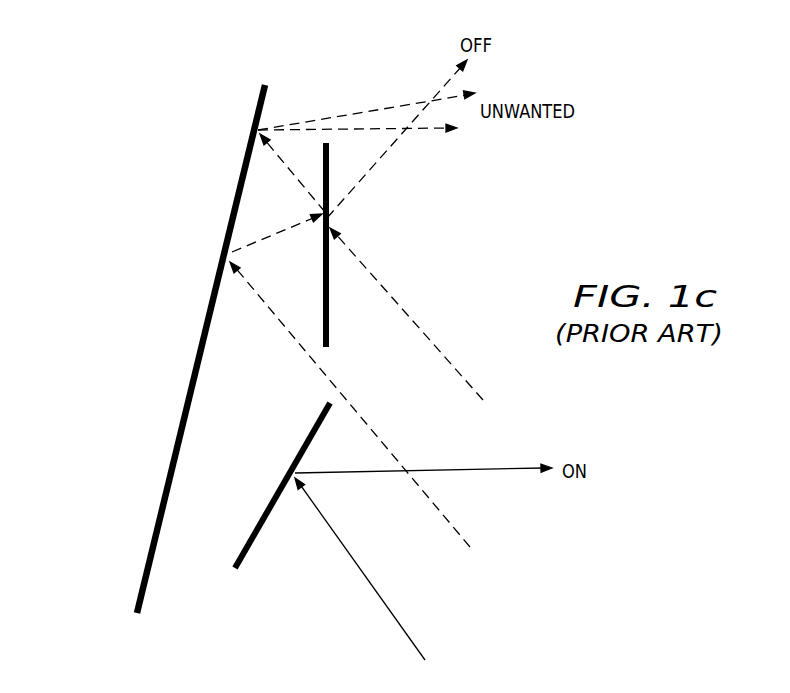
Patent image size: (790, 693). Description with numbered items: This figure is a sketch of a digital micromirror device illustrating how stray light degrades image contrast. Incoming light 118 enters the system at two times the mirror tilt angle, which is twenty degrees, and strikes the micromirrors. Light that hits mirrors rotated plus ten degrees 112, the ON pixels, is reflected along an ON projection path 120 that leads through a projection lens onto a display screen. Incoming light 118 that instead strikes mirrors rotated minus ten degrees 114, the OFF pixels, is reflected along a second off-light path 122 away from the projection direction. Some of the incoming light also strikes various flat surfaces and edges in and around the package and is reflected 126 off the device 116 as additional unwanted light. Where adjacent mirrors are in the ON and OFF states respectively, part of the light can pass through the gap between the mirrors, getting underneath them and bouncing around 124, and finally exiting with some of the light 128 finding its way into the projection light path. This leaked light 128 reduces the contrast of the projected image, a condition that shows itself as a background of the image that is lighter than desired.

The mirrors rotated +10° (ON pixels) 112 is at (253, 536).
The mirrors rotated −10° (OFF pixels) 114 is at (330, 325).
The device 116 is at (181, 427).
The incoming light 118 is at (448, 360).
The ON projection path 120 is at (495, 474).
The second off-light path 122 is at (355, 188).
The light bouncing underneath the mirrors 124 is at (278, 233).
The reflected unwanted light 126 is at (378, 109).
The exiting light 128 is at (415, 130).